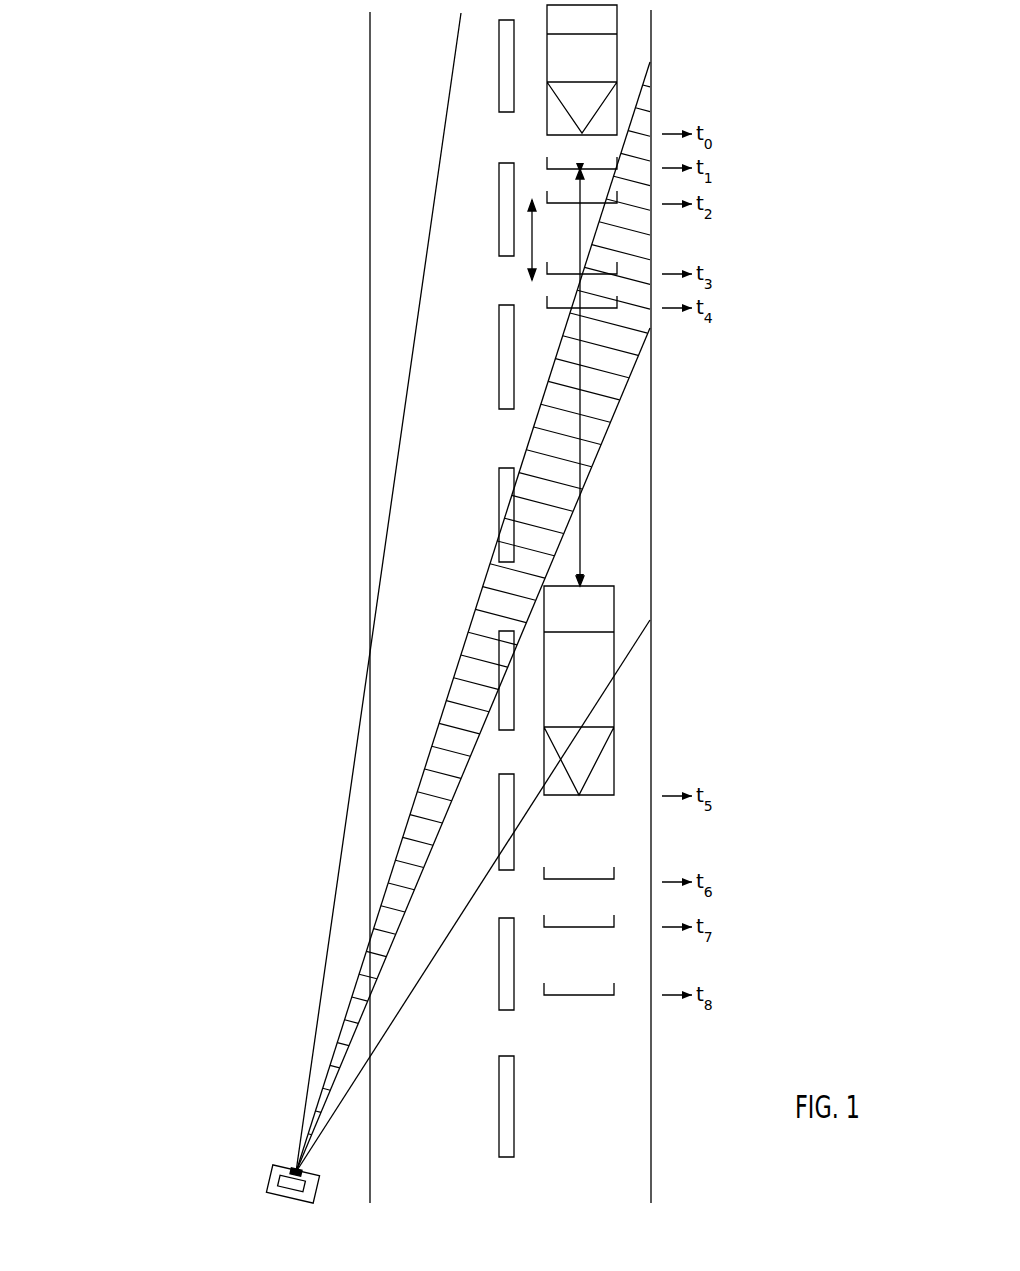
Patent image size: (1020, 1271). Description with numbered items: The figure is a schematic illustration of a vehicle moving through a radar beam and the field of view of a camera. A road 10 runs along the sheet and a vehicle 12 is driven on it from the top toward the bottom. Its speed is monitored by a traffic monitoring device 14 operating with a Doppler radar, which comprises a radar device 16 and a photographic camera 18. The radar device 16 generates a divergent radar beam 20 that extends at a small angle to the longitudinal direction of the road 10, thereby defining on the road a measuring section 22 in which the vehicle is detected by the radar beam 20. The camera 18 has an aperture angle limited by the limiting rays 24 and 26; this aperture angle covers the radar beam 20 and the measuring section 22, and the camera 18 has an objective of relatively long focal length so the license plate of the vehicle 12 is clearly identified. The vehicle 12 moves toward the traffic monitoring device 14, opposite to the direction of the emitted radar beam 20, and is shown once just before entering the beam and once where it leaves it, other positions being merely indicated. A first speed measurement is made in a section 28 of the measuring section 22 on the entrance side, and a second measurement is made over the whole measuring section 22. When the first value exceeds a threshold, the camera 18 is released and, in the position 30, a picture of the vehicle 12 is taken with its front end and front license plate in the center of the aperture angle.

The road 10 is at (640, 34).
The vehicle 12 is at (630, 52).
The traffic monitoring device 14 is at (272, 1147).
The radar device 16 is at (322, 1172).
The photographic camera 18 is at (274, 1170).
The radar beam 20 is at (497, 580).
The measuring section 22 is at (583, 365).
The limiting ray 24 is at (400, 440).
The limiting ray 26 is at (445, 942).
The section of the measuring section on the entrance side 28 is at (533, 233).
The position 30 is at (562, 308).